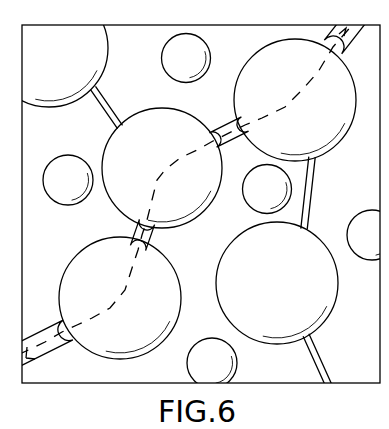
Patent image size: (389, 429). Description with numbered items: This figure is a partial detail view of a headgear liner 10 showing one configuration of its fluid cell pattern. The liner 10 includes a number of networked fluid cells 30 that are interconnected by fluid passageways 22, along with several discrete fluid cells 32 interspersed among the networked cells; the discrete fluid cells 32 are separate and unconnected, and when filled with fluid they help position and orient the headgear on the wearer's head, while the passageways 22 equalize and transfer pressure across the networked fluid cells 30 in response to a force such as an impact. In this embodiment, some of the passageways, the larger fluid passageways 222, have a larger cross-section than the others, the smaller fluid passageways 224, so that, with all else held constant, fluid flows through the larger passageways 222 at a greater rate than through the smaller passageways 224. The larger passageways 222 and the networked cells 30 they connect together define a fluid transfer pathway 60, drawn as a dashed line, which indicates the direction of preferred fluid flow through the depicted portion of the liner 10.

The liner 10 is at (82, 374).
The fluid passageways 22 is at (162, 243).
The networked fluid cells 30 is at (137, 164).
The discrete fluid cells 32 is at (162, 57).
The fluid transfer pathway 60 is at (153, 199).
The larger fluid passageways 222 is at (218, 130).
The smaller fluid passageways 224 is at (307, 197).